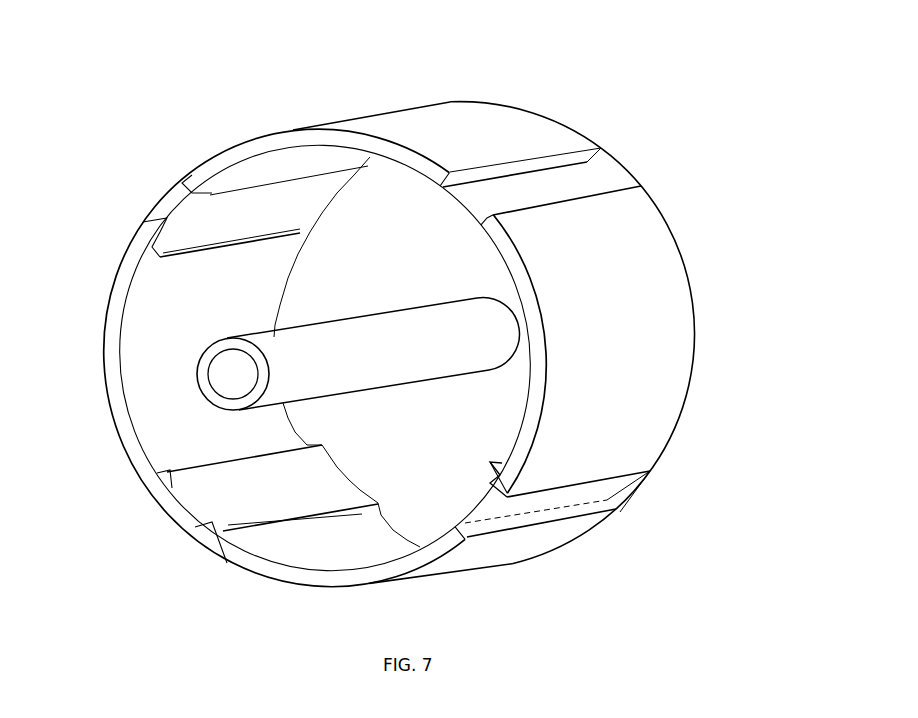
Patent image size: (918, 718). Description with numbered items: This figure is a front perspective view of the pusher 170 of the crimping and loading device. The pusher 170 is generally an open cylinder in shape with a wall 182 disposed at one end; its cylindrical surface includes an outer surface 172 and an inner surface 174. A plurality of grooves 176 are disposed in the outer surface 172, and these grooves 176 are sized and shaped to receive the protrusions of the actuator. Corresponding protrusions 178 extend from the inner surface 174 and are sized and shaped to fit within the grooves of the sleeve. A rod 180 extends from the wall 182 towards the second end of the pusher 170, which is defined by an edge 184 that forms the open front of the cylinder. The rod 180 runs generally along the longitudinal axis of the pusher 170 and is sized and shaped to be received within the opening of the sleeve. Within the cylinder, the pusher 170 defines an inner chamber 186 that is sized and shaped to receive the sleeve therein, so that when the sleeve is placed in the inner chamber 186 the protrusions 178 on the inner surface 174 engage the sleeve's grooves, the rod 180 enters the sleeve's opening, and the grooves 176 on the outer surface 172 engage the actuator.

The pusher 170 is at (704, 164).
The outer surface 172 is at (640, 300).
The inner surface 174 is at (172, 348).
The grooves 176 is at (535, 180).
The protrusions 178 is at (443, 203).
The rod 180 is at (273, 347).
The wall 182 is at (400, 205).
The edge 184 is at (237, 562).
The inner chamber 186 is at (347, 352).